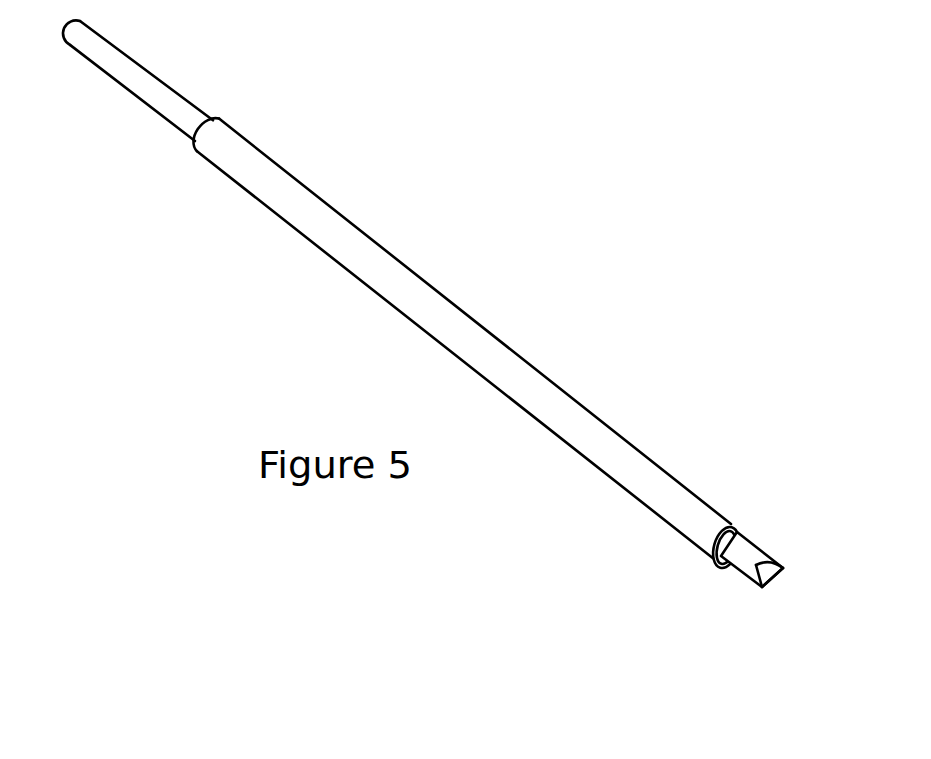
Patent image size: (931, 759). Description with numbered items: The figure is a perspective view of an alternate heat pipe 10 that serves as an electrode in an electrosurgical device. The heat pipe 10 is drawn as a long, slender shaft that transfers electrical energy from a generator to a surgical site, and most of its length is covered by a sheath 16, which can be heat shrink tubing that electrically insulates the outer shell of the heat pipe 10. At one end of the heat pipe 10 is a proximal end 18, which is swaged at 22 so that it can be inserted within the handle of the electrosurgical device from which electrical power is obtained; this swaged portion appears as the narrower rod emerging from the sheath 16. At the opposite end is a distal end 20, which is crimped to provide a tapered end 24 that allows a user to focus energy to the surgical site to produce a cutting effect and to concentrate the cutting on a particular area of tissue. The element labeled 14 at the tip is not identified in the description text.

The heat pipe 10 is at (450, 333).
The tip member 14 is at (749, 589).
The sheath 16 is at (598, 417).
The proximal end 18 is at (138, 80).
The distal end 20 is at (810, 565).
The swaged portion 22 is at (111, 77).
The tapered end 24 is at (751, 612).